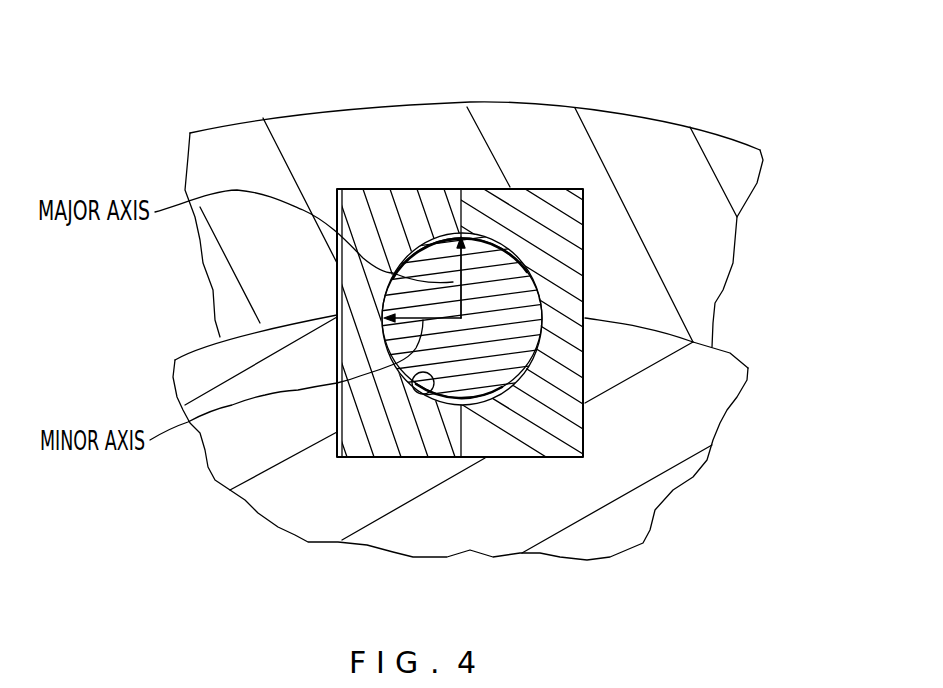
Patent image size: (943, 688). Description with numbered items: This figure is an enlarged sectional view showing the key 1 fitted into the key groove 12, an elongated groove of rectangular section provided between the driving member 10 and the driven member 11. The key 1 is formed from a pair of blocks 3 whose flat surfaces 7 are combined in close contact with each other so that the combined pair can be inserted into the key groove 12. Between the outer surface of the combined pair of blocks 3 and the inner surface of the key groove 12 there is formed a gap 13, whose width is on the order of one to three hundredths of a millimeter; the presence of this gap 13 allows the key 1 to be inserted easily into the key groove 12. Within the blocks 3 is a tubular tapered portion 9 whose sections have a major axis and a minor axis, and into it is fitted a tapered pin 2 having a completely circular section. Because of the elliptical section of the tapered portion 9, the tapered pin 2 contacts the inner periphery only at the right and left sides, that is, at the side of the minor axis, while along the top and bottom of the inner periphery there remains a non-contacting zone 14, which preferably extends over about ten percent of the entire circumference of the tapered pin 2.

The key 1 is at (428, 188).
The tapered pin 2 is at (523, 288).
The blocks 3 is at (575, 217).
The flat surfaces 7 is at (463, 193).
The tubular tapered portion 9 is at (415, 378).
The driving member 10 is at (730, 353).
The driven member 11 is at (678, 123).
The key groove 12 is at (545, 458).
The gap 13 is at (340, 189).
The non-contacting zone 14 is at (467, 233).